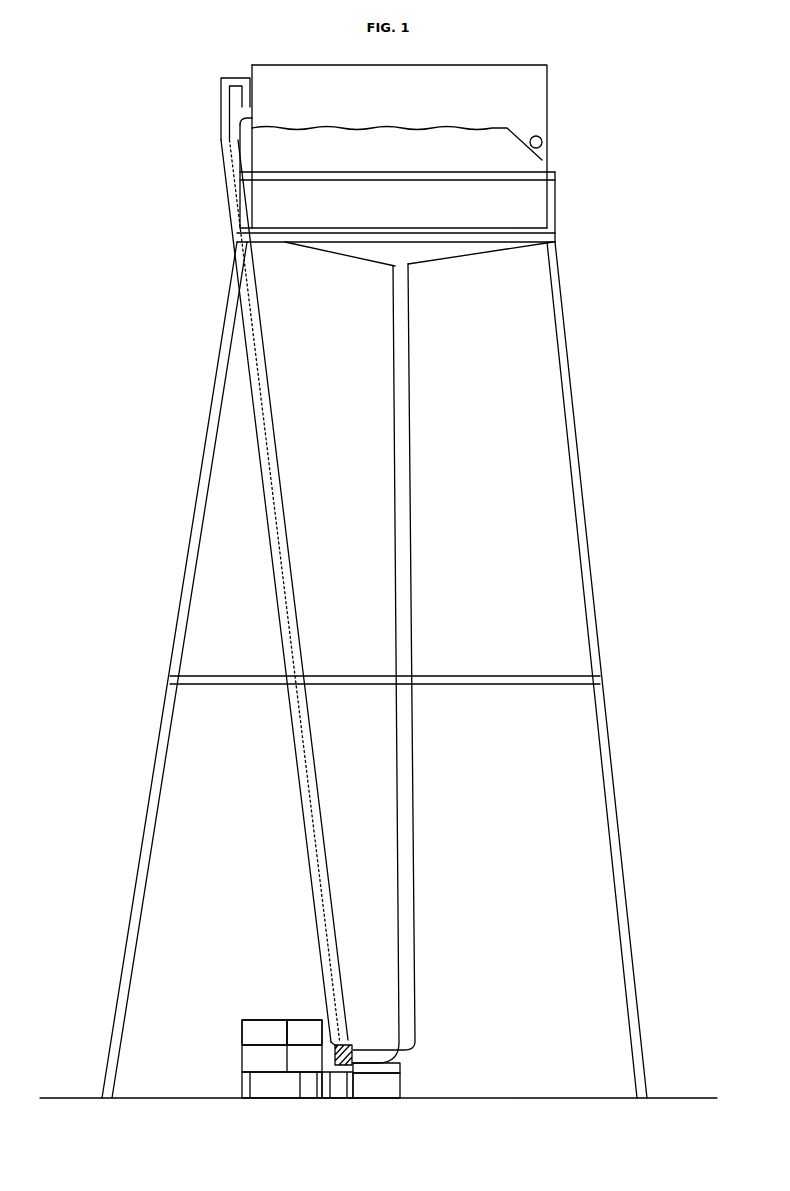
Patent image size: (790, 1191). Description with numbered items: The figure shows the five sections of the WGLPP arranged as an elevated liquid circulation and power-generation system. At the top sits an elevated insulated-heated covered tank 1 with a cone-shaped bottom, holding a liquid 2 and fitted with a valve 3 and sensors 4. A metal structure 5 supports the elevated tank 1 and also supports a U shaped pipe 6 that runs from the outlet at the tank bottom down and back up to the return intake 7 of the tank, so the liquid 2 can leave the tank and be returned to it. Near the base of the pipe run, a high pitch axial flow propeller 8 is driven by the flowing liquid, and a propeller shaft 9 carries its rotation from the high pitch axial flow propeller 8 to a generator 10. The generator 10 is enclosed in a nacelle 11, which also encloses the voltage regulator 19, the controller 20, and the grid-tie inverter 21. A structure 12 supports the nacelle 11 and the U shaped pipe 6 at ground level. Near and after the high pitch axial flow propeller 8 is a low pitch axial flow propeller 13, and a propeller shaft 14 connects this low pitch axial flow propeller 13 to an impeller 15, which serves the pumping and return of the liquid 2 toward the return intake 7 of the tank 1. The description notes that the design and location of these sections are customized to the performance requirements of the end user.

The tank 1 is at (461, 273).
The liquid 2 is at (543, 160).
The valve 3 is at (396, 269).
The sensors 4 is at (547, 140).
The metal structure 5 is at (200, 468).
The U shaped pipe 6 is at (430, 375).
The return intake 7 is at (258, 113).
The high pitch axial flow propeller 8 is at (377, 1065).
The propeller shaft 9 is at (333, 1090).
The generator 10 is at (300, 1085).
The nacelle 11 is at (230, 1044).
The structure 12 is at (402, 1085).
The low pitch axial flow propeller 13 is at (343, 1040).
The propeller shaft 14 is at (316, 880).
The impeller 15 is at (233, 100).
The voltage regulator 19 is at (270, 1085).
The controller 20 is at (266, 1018).
The grid-tie inverter 21 is at (303, 1018).